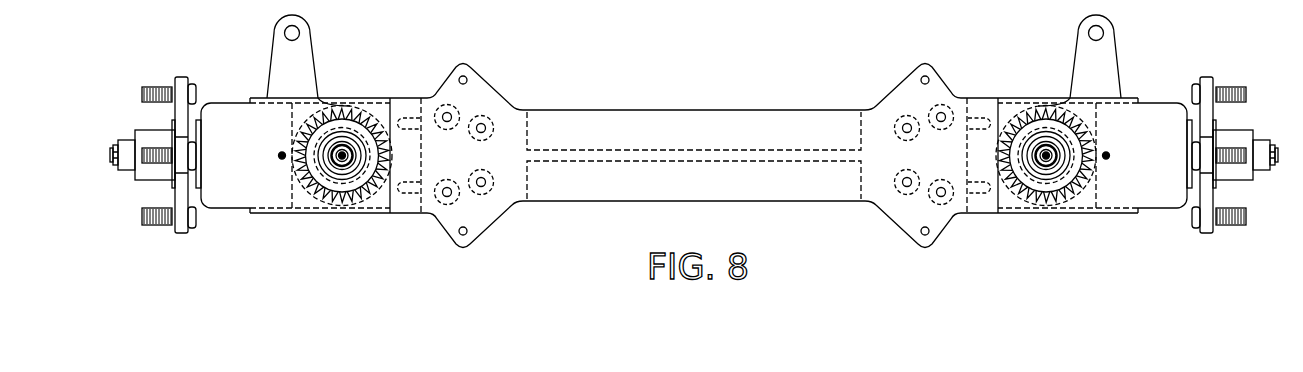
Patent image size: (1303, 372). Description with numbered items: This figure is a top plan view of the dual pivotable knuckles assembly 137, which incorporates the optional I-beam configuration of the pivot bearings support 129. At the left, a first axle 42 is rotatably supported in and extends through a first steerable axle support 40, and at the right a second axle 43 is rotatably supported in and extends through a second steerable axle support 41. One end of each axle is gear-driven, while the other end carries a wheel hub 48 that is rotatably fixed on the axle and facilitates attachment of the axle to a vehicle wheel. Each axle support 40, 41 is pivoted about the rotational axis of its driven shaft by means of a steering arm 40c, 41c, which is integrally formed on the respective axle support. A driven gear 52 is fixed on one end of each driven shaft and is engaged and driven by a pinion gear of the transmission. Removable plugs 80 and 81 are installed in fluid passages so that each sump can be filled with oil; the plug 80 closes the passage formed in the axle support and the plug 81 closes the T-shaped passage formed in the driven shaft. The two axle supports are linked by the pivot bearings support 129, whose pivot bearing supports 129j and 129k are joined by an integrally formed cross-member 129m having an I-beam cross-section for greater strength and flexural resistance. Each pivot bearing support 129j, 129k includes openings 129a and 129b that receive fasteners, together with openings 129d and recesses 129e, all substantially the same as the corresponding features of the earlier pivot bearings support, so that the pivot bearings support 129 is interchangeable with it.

The dual pivotable knuckles assembly 137 is at (185, 41).
The first steerable axle support 40 is at (221, 167).
The second steerable axle support 41 is at (1146, 166).
The steering arm 40c is at (317, 64).
The steering arm 41c is at (1071, 64).
The first axle 42 is at (104, 150).
The second axle 43 is at (1284, 150).
The wheel hub 48 is at (148, 181).
The driven gear 52 is at (330, 202).
The removable plug 80 is at (281, 160).
The removable plug 81 is at (337, 152).
The pivot bearings support 129 is at (645, 72).
The openings 129a is at (451, 185).
The openings 129b is at (467, 75).
The openings 129d is at (423, 220).
The recesses 129e is at (443, 107).
The pivot bearing support 129j is at (403, 97).
The pivot bearing support 129k is at (985, 97).
The cross-member 129m is at (694, 109).